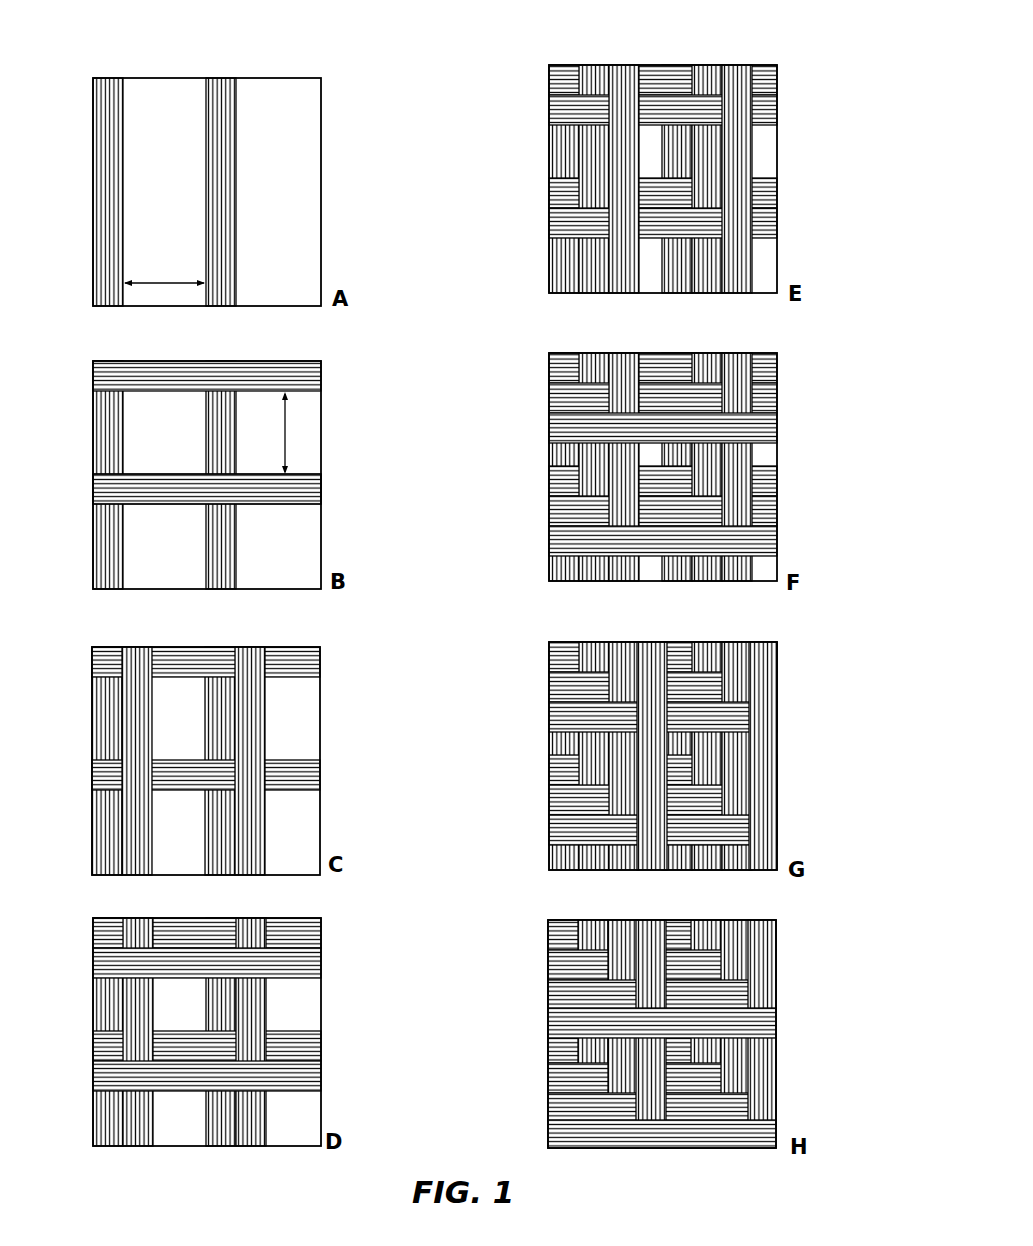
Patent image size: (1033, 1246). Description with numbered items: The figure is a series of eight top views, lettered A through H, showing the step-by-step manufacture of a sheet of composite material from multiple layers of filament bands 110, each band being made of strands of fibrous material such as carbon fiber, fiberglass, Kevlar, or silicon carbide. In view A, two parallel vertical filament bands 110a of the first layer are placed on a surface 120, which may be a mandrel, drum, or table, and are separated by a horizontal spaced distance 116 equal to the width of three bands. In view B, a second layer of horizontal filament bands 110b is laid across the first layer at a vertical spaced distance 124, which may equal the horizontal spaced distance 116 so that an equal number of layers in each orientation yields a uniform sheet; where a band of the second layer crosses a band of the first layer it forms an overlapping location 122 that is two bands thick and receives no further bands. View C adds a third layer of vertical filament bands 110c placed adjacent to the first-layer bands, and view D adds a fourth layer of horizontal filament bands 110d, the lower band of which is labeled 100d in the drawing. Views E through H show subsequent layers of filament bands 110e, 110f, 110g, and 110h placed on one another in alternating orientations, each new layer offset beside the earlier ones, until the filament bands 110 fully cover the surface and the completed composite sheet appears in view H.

The first layer of filament bands 110a is at (225, 77).
The surface 120 is at (288, 195).
The horizontal spaced distance 116 is at (163, 284).
The second layer of filament bands 110b is at (322, 377).
The vertical spaced distance 124 is at (287, 427).
The overlapping location 122 is at (247, 494).
The filament bands 110 is at (142, 646).
The third layer of filament bands 110c is at (248, 646).
The fourth layer of filament bands 110d is at (322, 962).
The fourth layer strip 100d is at (322, 1080).
The fifth layer of filament bands 110e is at (623, 78).
The sixth layer of filament bands 110f is at (762, 550).
The seventh layer of filament bands 110g is at (647, 653).
The eighth layer of filament bands 110h is at (562, 1133).